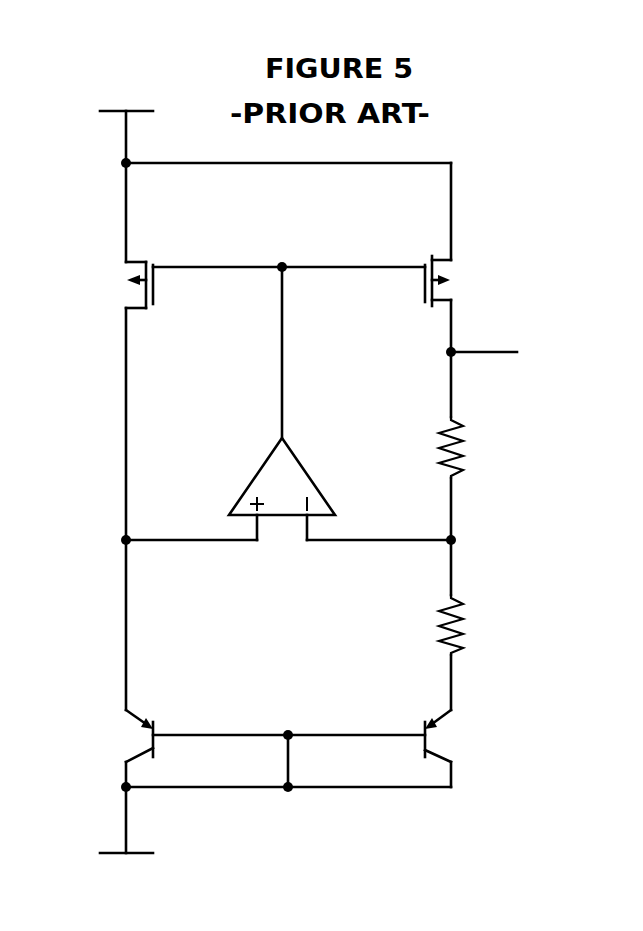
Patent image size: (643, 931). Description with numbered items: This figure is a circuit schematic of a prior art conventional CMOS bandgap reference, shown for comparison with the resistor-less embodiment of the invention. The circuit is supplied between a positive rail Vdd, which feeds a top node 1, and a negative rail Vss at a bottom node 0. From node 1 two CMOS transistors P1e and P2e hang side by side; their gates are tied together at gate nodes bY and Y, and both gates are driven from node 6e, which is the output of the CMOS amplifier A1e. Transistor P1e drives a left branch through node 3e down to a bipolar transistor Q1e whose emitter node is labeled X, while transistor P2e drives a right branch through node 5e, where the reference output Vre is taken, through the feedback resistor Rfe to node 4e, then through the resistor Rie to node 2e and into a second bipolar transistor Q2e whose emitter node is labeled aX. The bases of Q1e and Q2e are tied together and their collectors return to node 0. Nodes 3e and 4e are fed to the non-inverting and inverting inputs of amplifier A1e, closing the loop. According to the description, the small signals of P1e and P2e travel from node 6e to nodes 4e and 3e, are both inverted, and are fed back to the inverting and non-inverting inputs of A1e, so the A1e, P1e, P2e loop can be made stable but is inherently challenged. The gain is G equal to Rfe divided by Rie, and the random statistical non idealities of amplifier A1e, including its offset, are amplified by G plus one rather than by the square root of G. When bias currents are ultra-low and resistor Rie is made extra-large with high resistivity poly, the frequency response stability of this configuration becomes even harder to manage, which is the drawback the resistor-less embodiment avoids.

The positive supply rail Vdd is at (101, 124).
The supply node 1 is at (265, 204).
The CMOS transistor P1e is at (111, 285).
The gate node bY of P1 bY is at (186, 271).
The CMOS transistor P2e is at (464, 283).
The gate node Y of P2 Y is at (379, 266).
The node 6e is at (274, 340).
The output node 5e is at (430, 358).
The reference voltage output Vr Vre is at (515, 353).
The resistor Rfe is at (438, 447).
The node 4e is at (466, 536).
The resistor Rie is at (438, 625).
The node 2e at Q2 emitter 2e is at (431, 682).
The CMOS amplifier A1e is at (266, 487).
The node 3e is at (286, 509).
The bipolar transistor Q1 Q1e is at (111, 748).
The emitter node X of Q1 X is at (195, 721).
The bipolar transistor Q2 Q2e is at (463, 748).
The emitter node aX of Q2 aX is at (383, 750).
The ground node 0 is at (271, 817).
The negative supply rail Vss is at (146, 866).